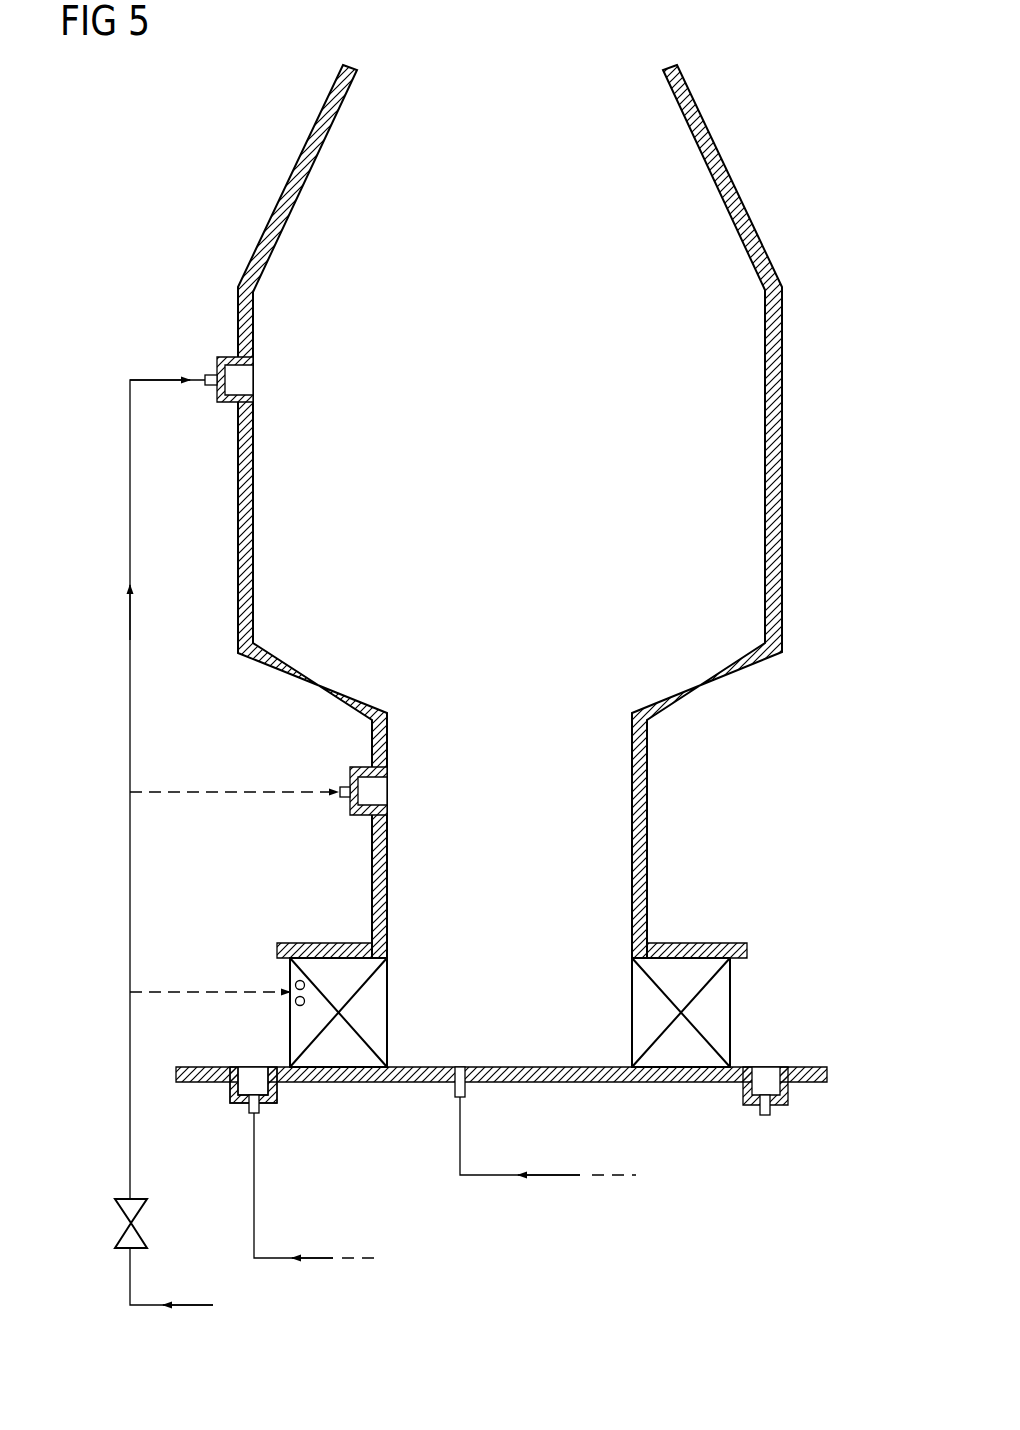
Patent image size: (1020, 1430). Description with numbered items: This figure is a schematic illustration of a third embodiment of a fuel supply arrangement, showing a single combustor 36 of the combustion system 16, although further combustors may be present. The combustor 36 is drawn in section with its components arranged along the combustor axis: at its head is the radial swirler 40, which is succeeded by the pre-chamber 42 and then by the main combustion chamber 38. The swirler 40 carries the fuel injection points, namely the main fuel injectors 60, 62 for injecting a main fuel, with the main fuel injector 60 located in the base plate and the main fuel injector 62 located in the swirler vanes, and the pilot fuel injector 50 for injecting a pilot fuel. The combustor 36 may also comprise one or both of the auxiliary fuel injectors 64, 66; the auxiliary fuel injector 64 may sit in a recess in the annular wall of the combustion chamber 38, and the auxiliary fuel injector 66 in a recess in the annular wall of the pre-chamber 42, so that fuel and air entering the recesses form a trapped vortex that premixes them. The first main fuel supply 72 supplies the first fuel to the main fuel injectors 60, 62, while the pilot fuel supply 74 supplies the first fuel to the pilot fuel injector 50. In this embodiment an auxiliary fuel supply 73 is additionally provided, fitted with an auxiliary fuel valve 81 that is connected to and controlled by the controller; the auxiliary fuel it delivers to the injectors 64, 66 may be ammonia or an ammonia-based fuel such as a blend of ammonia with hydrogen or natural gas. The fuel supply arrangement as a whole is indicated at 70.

The combustion system 16 is at (836, 88).
The combustor 36 is at (783, 224).
The main combustion chamber 38 is at (516, 264).
The radial swirler 40 is at (722, 1010).
The pre-chamber 42 is at (523, 854).
The pilot fuel injector 50 is at (470, 1085).
The main fuel injector 60 is at (264, 1107).
The main fuel injector 62 is at (292, 985).
The auxiliary fuel injector 64 is at (343, 783).
The auxiliary fuel injector 66 is at (212, 368).
The fuel supply system 70 is at (428, 1290).
The first main fuel supply 72 is at (254, 1207).
The auxiliary fuel supply 73 is at (130, 1068).
The pilot fuel supply 74 is at (460, 1140).
The auxiliary fuel valve 81 is at (115, 1215).